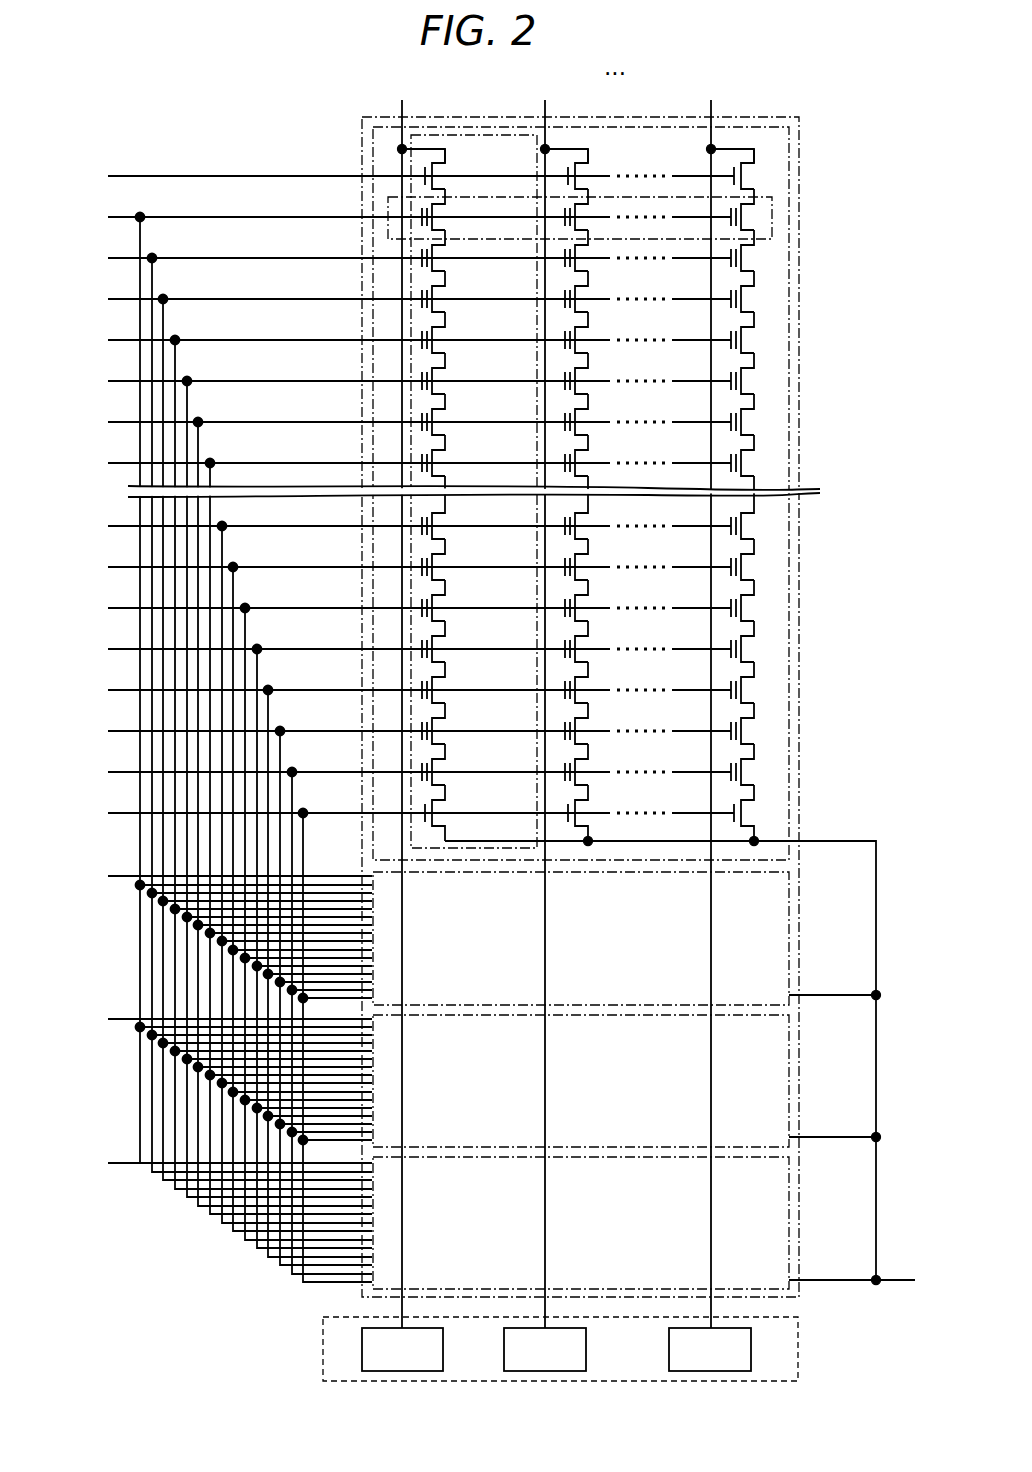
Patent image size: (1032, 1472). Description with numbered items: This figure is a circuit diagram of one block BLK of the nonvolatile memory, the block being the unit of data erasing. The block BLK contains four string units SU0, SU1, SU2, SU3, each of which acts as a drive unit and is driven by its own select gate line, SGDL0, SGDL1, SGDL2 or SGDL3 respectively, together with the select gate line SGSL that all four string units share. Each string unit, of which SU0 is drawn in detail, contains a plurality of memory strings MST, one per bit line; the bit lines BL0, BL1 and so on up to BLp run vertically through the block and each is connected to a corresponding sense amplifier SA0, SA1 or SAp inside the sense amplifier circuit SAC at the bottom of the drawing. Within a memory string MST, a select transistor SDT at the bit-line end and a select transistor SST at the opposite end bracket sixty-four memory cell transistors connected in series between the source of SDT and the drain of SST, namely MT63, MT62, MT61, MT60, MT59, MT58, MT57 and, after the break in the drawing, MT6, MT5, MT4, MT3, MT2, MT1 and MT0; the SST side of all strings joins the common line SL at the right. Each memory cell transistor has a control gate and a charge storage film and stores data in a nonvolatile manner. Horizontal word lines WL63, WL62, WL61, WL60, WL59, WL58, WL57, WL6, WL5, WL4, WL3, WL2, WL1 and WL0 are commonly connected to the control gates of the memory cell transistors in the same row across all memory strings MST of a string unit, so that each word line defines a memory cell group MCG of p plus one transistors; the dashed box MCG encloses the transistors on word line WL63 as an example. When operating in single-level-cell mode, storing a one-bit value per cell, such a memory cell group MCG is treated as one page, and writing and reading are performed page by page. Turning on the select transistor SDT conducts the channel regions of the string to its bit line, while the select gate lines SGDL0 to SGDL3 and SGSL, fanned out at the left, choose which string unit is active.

The block BLK is at (362, 132).
The string unit SU0 is at (789, 413).
The string unit SU1 is at (789, 922).
The string unit SU2 is at (789, 1064).
The string unit SU3 is at (789, 1204).
The memory string MST is at (475, 137).
The memory cell group MCG is at (772, 218).
The sense amplifier circuit SAC is at (323, 1348).
The sense amplifier SA0 is at (402, 1349).
The sense amplifier SA1 is at (545, 1349).
The sense amplifier SAp is at (710, 1349).
The bit line BL0 is at (401, 698).
The bit line BL1 is at (544, 698).
The bit line BLp is at (710, 698).
The source line SL is at (680, 1061).
The select transistor SDT is at (446, 175).
The select transistor SST is at (446, 812).
The memory cell transistor MT63 is at (446, 216).
The memory cell transistor MT62 is at (446, 257).
The memory cell transistor MT61 is at (446, 298).
The memory cell transistor MT60 is at (446, 339).
The memory cell transistor MT59 is at (446, 380).
The memory cell transistor MT58 is at (446, 421).
The memory cell transistor MT57 is at (446, 462).
The memory cell transistor MT6 is at (446, 525).
The memory cell transistor MT5 is at (446, 566).
The memory cell transistor MT4 is at (446, 607).
The memory cell transistor MT3 is at (446, 648).
The memory cell transistor MT2 is at (446, 689).
The memory cell transistor MT1 is at (446, 730).
The memory cell transistor MT0 is at (446, 771).
The select gate line SGDL0 is at (380, 176).
The select gate line SGDL1 is at (199, 876).
The select gate line SGDL2 is at (199, 1019).
The select gate line SGDL3 is at (199, 1163).
The select gate line SGSL is at (389, 1041).
The word line WL63 is at (385, 683).
The word line WL62 is at (385, 708).
The word line WL61 is at (385, 733).
The word line WL60 is at (385, 758).
The word line WL59 is at (385, 782).
The word line WL58 is at (385, 807).
The word line WL57 is at (385, 832).
The word line WL6 is at (393, 868).
The word line WL5 is at (393, 892).
The word line WL4 is at (393, 917).
The word line WL3 is at (393, 942).
The word line WL2 is at (393, 967).
The word line WL1 is at (393, 991).
The word line WL0 is at (393, 1016).